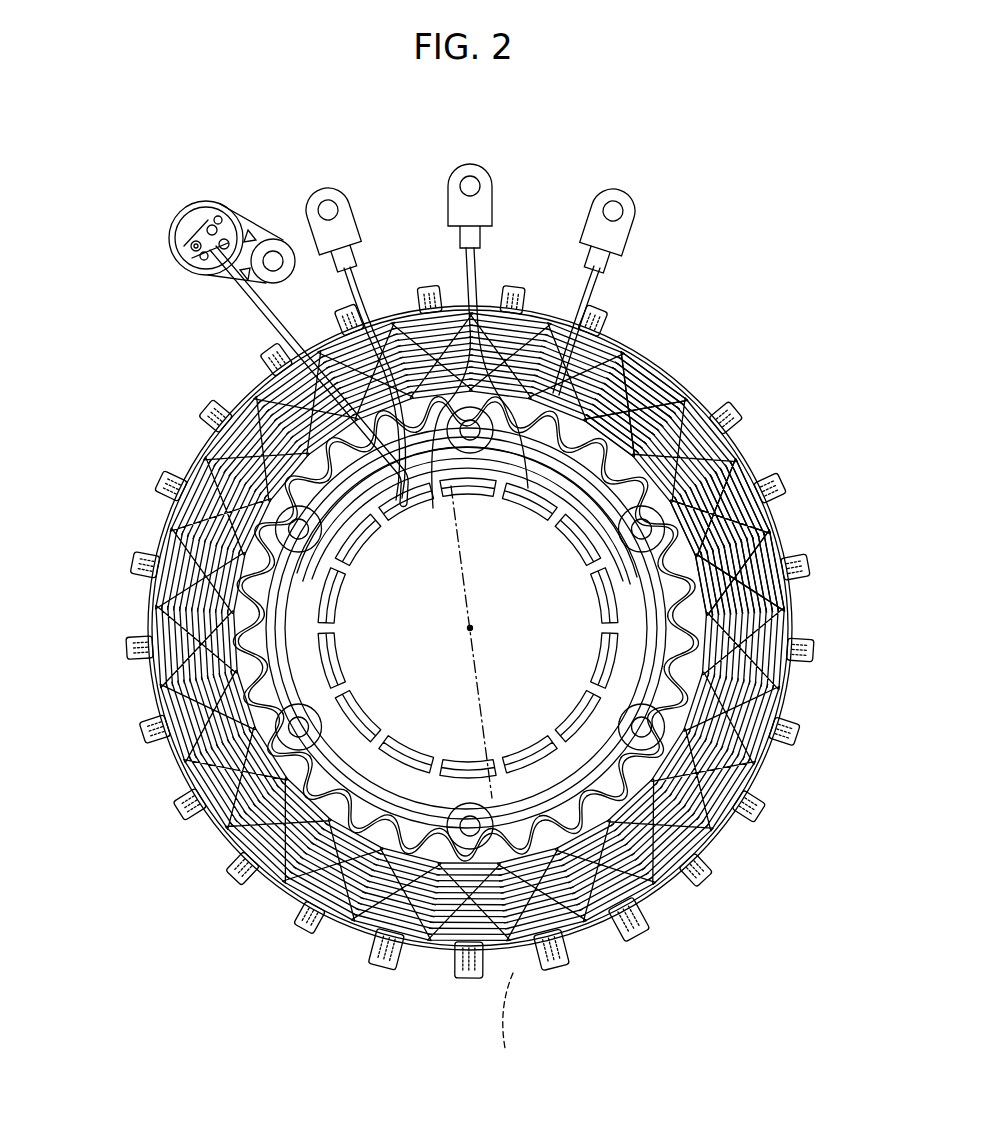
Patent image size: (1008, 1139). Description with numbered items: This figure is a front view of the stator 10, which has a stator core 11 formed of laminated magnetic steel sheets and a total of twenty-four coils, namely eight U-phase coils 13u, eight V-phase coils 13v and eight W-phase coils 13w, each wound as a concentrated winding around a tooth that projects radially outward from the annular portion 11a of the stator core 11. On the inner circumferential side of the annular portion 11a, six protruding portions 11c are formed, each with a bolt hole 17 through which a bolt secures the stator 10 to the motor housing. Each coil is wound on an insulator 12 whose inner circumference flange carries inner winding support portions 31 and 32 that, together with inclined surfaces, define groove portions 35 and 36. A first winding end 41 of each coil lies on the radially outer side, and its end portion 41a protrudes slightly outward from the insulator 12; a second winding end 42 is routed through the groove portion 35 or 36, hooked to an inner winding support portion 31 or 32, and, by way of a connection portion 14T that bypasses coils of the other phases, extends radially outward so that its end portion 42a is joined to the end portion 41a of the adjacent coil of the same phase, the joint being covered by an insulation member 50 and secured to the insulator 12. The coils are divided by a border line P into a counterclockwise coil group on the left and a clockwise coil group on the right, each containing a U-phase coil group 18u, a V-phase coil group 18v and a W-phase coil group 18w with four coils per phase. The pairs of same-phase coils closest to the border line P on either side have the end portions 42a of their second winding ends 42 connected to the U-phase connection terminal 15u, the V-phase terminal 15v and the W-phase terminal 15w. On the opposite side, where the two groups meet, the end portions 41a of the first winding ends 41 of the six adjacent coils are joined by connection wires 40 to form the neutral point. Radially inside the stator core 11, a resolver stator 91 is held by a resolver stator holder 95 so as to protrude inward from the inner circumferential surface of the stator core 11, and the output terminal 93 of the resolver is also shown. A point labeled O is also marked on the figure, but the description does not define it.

The stator 10 is at (548, 128).
The insulator 12 is at (788, 620).
The U-phase coil 13u is at (432, 320).
The V-phase coil 13v is at (540, 320).
The W-phase coil 13w is at (380, 330).
The U-phase coil group 18u is at (705, 380).
The V-phase coil group 18v is at (765, 455).
The W-phase coil group 18w is at (785, 535).
The connection wire 40 is at (690, 870).
The first winding end 41 is at (690, 390).
The end portion of first winding end 41a is at (720, 398).
The end portion of second winding end 42a is at (340, 262).
The insulation member 50 is at (770, 478).
The connection portion 14T is at (610, 570).
The stator core 11 is at (330, 590).
The annular portion 11a is at (318, 620).
The protruding portion 11c is at (290, 730).
The bolt hole 17 is at (285, 705).
The groove portion 35 is at (370, 745).
The groove portion 36 is at (325, 700).
The second winding end 42 is at (470, 488).
The inner winding support portion 31 is at (410, 490).
The inner winding support portion 32 is at (380, 498).
The resolver stator 91 is at (471, 512).
The center axis O is at (466, 621).
The border line P is at (506, 1024).
The U-phase connection terminal 15u is at (315, 182).
The V-phase terminal 15v is at (462, 158).
The W-phase terminal 15w is at (612, 183).
The output terminal 93 is at (235, 205).
The resolver stator holder 95 is at (605, 430).